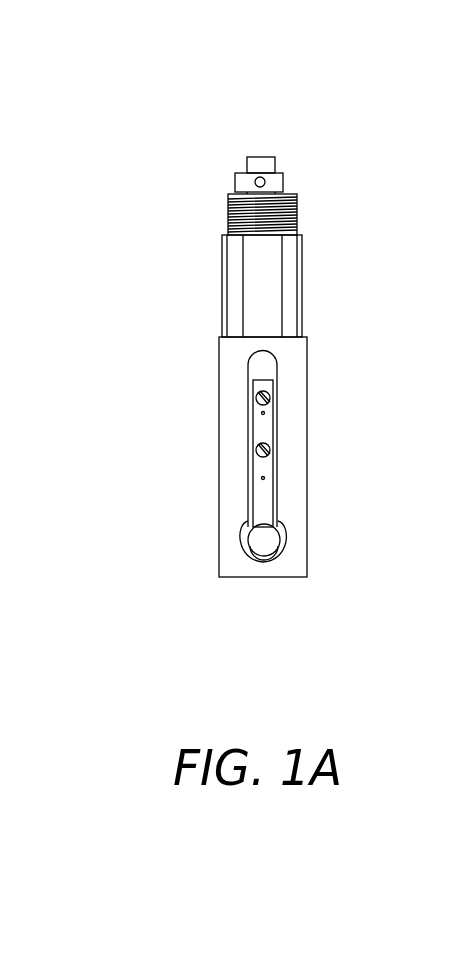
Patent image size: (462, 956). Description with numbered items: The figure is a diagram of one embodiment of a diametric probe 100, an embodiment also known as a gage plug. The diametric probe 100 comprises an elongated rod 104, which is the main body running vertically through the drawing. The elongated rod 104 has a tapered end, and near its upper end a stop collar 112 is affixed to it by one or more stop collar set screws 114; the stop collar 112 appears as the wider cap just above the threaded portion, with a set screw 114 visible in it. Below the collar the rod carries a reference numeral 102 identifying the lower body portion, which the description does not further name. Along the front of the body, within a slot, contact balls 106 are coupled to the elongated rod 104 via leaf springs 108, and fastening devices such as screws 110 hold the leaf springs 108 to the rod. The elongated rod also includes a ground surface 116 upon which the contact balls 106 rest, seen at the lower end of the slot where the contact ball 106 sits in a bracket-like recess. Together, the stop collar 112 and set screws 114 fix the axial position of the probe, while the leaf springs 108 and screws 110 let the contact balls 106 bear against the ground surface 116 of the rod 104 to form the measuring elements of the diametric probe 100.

The diametric probe 100 is at (393, 167).
The body 102 is at (307, 392).
The elongated rod 104 is at (263, 157).
The contact ball 106 is at (270, 533).
The leaf spring 108 is at (258, 433).
The screw 110 is at (278, 453).
The stop collar 112 is at (235, 182).
The stop collar set screw 114 is at (283, 185).
The ground surface 116 is at (287, 532).